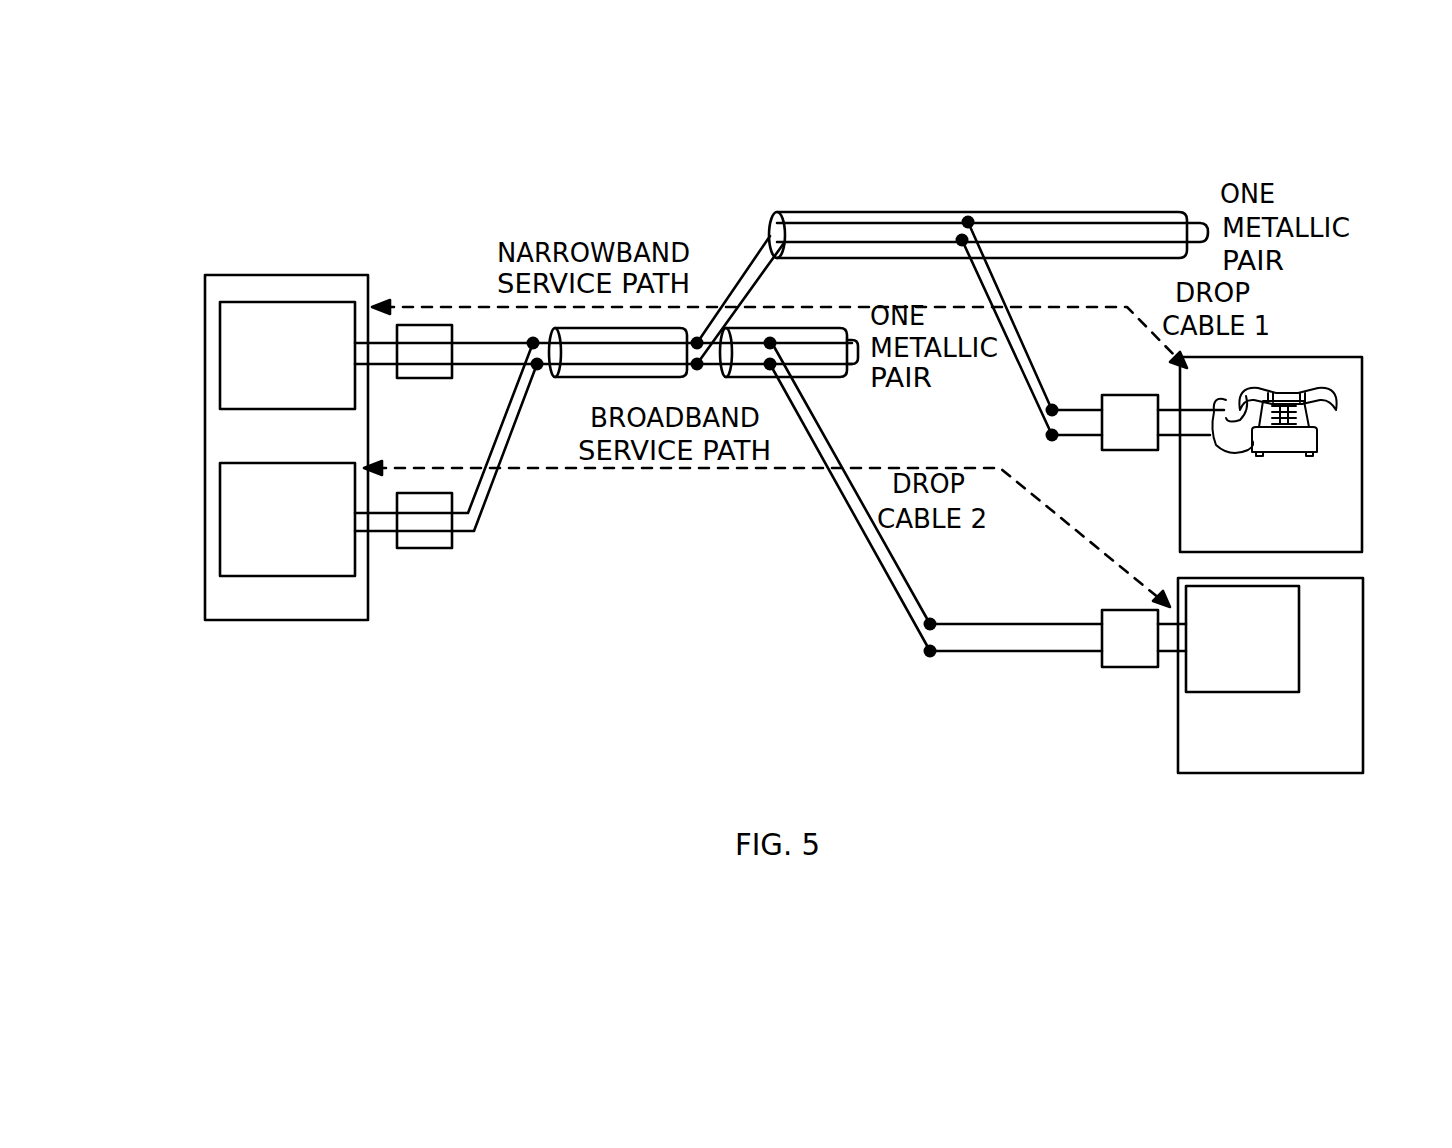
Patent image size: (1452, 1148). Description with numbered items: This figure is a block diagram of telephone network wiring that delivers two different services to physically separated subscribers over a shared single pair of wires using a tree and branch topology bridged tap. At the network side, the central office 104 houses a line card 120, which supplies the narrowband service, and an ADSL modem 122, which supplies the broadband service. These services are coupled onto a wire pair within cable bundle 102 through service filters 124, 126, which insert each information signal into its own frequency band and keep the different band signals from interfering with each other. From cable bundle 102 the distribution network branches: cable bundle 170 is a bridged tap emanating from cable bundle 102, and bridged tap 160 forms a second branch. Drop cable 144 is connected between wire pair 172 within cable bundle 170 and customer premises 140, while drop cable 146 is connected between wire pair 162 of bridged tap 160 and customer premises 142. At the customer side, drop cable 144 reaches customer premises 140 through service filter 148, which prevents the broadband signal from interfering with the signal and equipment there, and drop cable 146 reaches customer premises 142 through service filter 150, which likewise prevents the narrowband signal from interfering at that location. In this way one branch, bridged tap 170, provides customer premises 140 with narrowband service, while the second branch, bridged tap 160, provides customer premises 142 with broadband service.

The central office 104 is at (230, 650).
The line card 120 is at (219, 348).
The ADSL modem 122 is at (219, 508).
The service filter 124 is at (437, 325).
The service filter 126 is at (437, 493).
The cable bundle 102 is at (588, 378).
The bridged tap 160 is at (768, 378).
The wire pair 162 is at (860, 372).
The cable bundle 170 is at (1093, 258).
The wire pair 172 is at (1080, 258).
The drop cable 144 is at (1030, 392).
The drop cable 146 is at (872, 555).
The service filter 148 is at (1130, 450).
The service filter 150 is at (1130, 667).
The customer premises 140 is at (1365, 447).
The customer premises 142 is at (1365, 662).